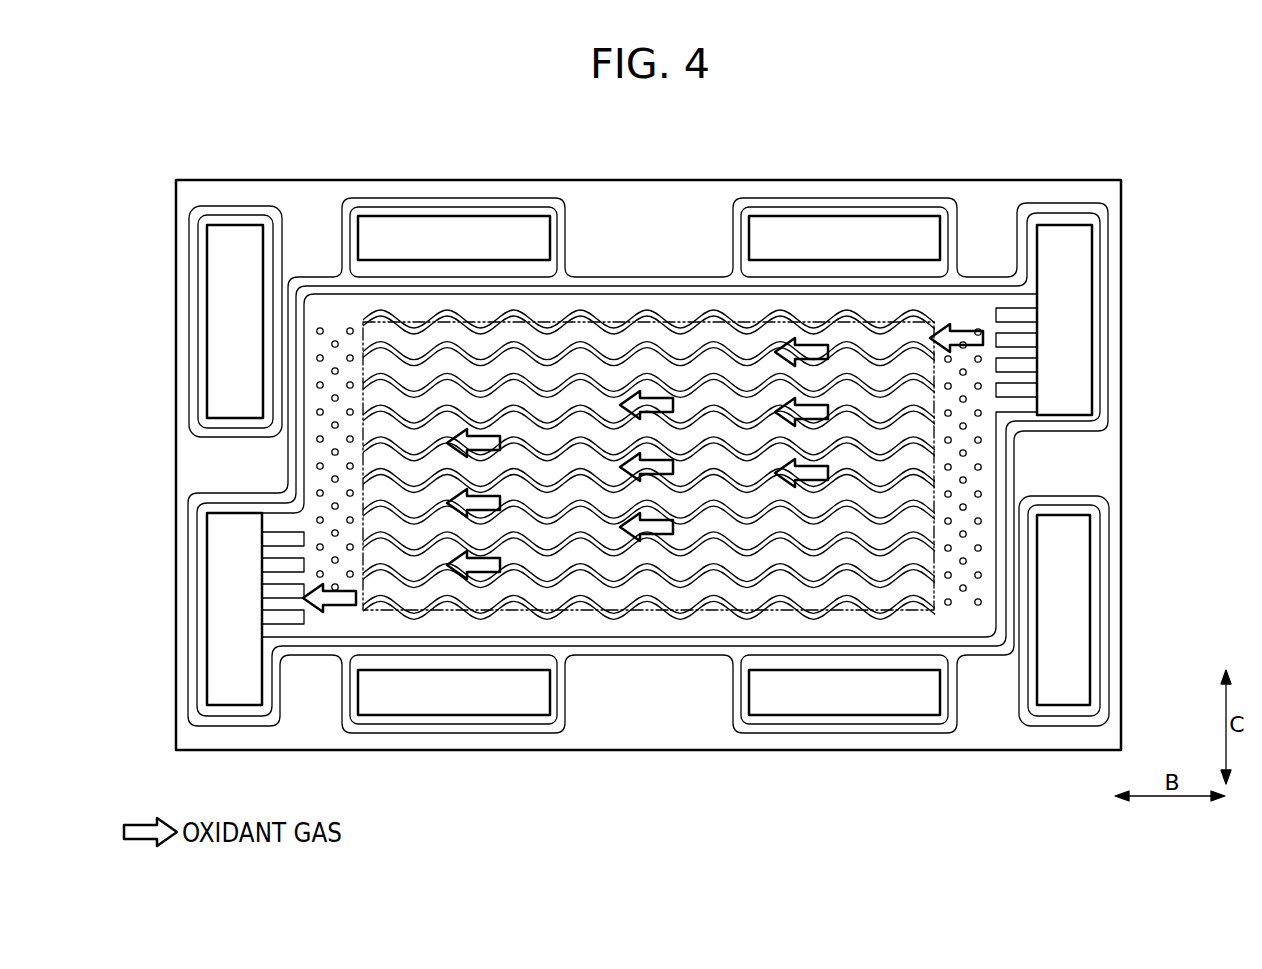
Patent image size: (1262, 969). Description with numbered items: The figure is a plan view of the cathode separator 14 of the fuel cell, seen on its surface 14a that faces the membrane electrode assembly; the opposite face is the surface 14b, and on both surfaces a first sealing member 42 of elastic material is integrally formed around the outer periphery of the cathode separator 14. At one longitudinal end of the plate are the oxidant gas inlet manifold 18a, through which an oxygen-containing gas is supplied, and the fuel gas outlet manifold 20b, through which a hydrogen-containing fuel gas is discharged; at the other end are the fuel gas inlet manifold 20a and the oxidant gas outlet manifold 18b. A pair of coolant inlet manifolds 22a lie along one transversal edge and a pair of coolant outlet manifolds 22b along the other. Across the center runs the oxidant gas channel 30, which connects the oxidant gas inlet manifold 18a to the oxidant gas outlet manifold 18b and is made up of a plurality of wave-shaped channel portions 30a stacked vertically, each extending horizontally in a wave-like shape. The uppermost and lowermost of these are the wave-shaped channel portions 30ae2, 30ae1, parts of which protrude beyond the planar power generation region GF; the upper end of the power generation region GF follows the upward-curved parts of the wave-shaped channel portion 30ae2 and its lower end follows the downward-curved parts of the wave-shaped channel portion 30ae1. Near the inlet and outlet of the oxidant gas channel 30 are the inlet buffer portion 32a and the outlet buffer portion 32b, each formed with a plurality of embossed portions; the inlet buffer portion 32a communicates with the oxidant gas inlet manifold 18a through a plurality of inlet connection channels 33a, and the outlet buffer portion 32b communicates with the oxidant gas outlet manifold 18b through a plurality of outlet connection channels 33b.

The cathode separator 14 is at (649, 422).
The surface of the cathode separator 14a is at (1051, 192).
The surface of the cathode separator 14b is at (1100, 166).
The first sealing member 42 is at (241, 180).
The oxidant gas inlet manifold 18a is at (1087, 261).
The oxidant gas outlet manifold 18b is at (213, 610).
The fuel gas inlet manifold 20a is at (213, 260).
The fuel gas outlet manifold 20b is at (1087, 629).
The coolant inlet manifold 22a is at (769, 227).
The coolant outlet manifold 22b is at (379, 227).
The oxidant gas channel 30 is at (643, 408).
The wave-shaped channel portion 30a is at (646, 470).
The wave-shaped channel portion 30ae1 is at (646, 607).
The wave-shaped channel portion 30ae2 is at (646, 285).
The inlet buffer portion 32a is at (966, 560).
The outlet buffer portion 32b is at (347, 384).
The inlet connection channel 33a is at (1028, 378).
The outlet connection channel 33b is at (270, 578).
The power generation region GF is at (710, 612).